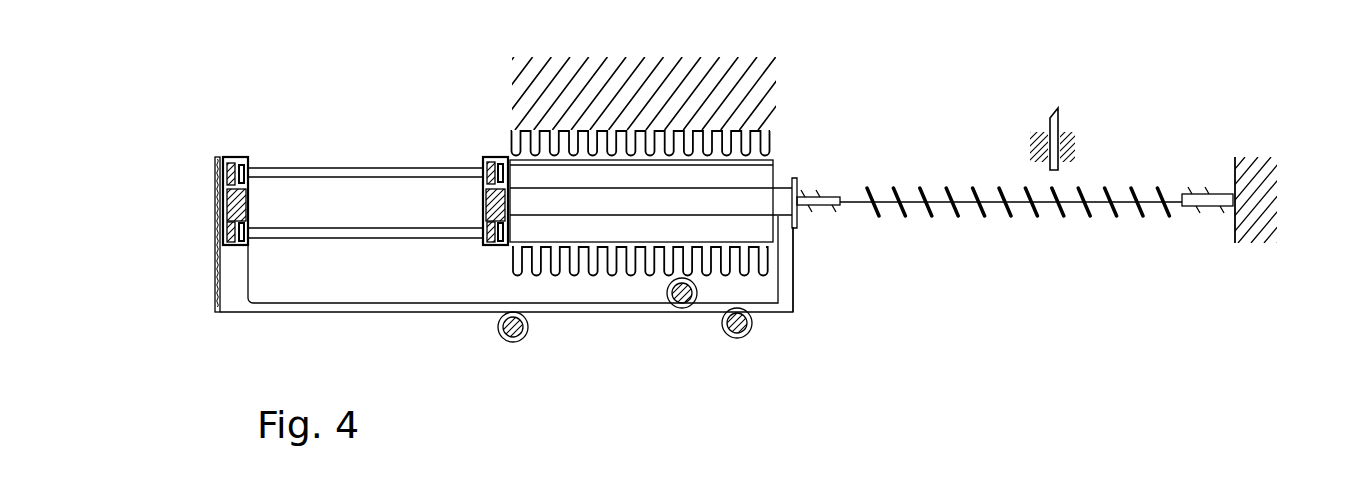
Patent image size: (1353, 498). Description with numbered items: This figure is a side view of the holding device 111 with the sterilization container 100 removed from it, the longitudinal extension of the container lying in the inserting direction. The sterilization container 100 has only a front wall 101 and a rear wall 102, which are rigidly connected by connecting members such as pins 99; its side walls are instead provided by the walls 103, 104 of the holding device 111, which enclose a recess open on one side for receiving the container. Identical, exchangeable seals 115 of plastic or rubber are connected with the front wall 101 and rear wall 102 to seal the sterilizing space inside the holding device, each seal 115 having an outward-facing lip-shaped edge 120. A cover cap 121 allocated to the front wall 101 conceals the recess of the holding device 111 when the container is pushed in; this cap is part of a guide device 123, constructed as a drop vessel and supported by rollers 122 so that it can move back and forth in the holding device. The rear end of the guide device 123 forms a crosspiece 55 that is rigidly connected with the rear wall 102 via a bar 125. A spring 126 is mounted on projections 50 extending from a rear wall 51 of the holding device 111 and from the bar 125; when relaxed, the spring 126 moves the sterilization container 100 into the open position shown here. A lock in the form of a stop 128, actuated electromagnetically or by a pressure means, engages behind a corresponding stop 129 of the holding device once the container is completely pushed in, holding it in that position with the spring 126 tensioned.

The projections 50 is at (820, 210).
The rear wall 51 is at (1233, 230).
The crosspiece 55 is at (792, 267).
The pins 99 is at (312, 228).
The sterilization container 100 is at (397, 203).
The front wall 101 is at (213, 203).
The rear wall 102 is at (483, 235).
The wall 103 is at (757, 164).
The wall 104 is at (600, 276).
The holding device 111 is at (897, 102).
The seals 115 is at (226, 157).
The lip-shaped edge 120 is at (238, 157).
The cover cap 121 is at (215, 172).
The rollers 122 is at (513, 342).
The guide device 123 is at (262, 310).
The bar 125 is at (705, 185).
The spring 126 is at (940, 222).
The stop 128 is at (1060, 112).
The stop 129 is at (797, 183).